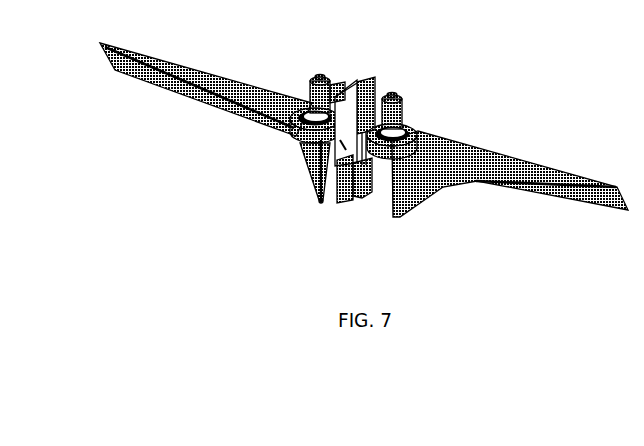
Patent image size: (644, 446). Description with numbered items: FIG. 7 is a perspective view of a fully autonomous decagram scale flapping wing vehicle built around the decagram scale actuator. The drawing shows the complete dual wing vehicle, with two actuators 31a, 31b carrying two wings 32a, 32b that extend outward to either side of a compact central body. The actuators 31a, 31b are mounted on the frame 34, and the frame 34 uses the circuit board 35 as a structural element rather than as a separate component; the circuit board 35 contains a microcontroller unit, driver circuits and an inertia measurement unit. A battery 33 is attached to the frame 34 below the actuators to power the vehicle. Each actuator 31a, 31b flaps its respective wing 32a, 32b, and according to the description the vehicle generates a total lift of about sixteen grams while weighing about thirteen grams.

The actuator 31a is at (292, 136).
The actuator 31b is at (417, 123).
The wing 32a is at (204, 82).
The wing 32b is at (533, 163).
The battery 33 is at (348, 195).
The frame 34 is at (398, 86).
The circuit board 35 is at (343, 147).